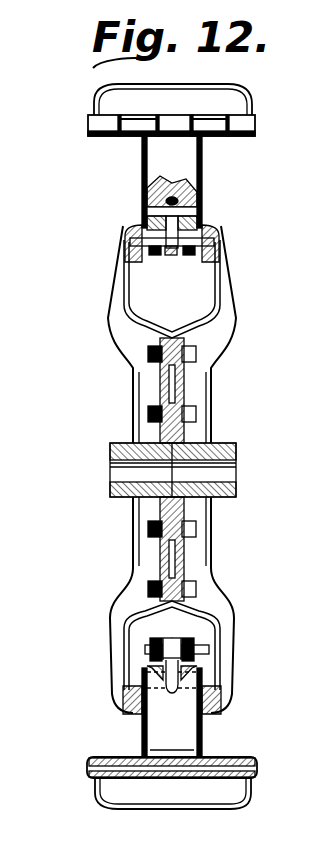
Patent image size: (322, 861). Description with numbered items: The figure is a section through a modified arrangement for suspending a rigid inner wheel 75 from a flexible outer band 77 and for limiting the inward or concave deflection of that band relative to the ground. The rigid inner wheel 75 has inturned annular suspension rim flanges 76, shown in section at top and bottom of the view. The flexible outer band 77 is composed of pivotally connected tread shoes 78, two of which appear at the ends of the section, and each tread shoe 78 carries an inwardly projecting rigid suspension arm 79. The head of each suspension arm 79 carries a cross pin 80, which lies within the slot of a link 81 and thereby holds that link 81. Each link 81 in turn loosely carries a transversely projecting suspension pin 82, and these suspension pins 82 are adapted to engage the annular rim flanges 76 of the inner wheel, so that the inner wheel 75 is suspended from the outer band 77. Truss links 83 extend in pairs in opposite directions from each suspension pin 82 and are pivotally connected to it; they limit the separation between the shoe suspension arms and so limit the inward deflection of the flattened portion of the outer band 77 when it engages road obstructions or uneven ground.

The rigid inner wheel 75 is at (225, 442).
The inturned annular suspension rim flanges 76 is at (136, 226).
The flexible outer band 77 is at (94, 147).
The tread shoe 78 is at (255, 136).
The suspension arm 79 is at (203, 171).
The cross pin 80 is at (200, 208).
The link 81 is at (149, 191).
The suspension pin 82 is at (204, 255).
The truss links 83 is at (188, 256).